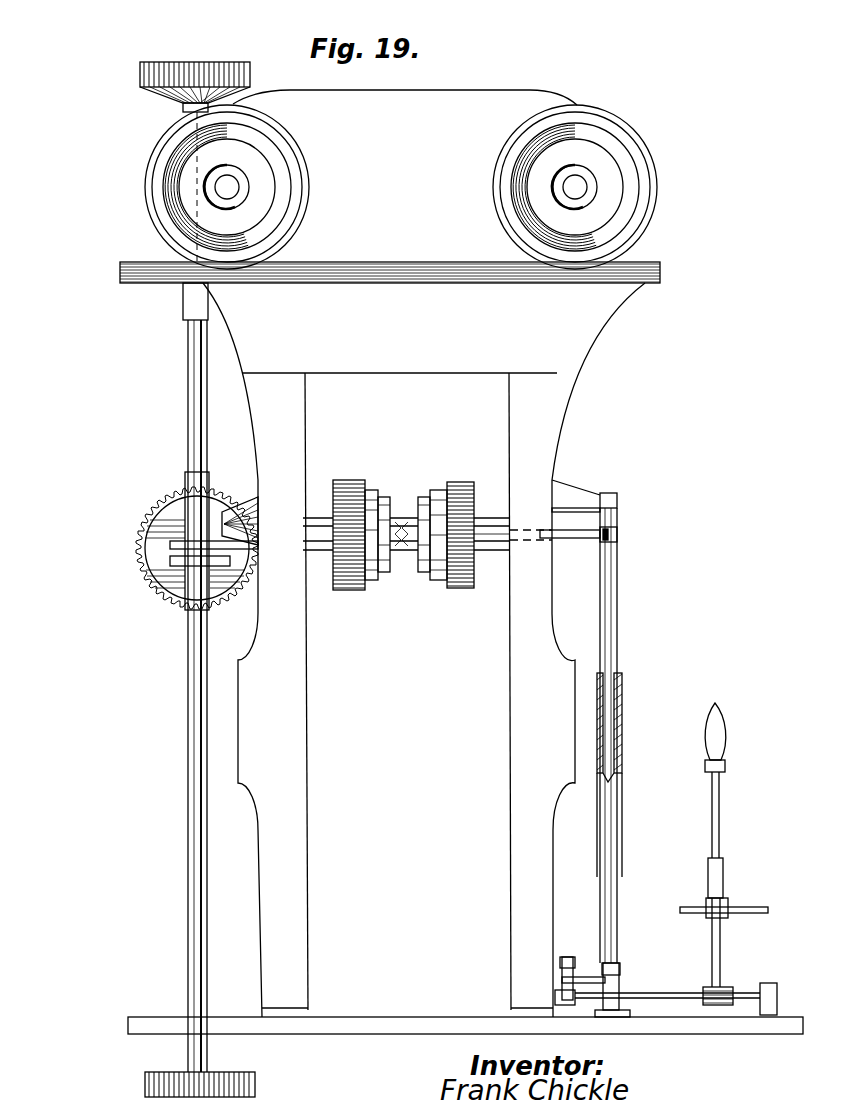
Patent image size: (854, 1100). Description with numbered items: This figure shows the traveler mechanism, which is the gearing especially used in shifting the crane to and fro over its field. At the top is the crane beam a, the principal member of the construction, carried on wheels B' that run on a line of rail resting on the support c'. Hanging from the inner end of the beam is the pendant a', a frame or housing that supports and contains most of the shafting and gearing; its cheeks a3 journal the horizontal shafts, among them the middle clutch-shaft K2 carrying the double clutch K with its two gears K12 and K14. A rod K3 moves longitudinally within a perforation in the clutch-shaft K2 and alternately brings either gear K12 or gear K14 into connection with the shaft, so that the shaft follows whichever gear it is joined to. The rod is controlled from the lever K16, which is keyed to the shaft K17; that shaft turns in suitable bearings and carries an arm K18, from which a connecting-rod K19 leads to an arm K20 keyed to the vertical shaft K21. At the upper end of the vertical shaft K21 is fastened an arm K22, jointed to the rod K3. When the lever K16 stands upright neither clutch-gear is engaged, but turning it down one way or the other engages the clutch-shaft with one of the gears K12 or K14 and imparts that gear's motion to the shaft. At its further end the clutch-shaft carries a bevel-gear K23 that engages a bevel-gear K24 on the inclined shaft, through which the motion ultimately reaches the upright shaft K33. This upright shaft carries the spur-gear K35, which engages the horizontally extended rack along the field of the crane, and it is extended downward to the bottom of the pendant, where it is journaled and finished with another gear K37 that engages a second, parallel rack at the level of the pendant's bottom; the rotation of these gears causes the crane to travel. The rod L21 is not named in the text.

The wheel B' is at (408, 187).
The beam a is at (405, 123).
The support c' is at (399, 267).
The spur-gear K35 is at (212, 87).
The upright shaft K33 is at (181, 432).
The bevel-gear K24 is at (136, 520).
The bevel-gear K23 is at (234, 510).
The clutch-gear K12 is at (361, 524).
The middle clutch K is at (427, 513).
The clutch-gear K14 is at (449, 522).
The clutch-shaft K2 is at (499, 538).
The rod K3 is at (578, 521).
The arm K22 is at (625, 533).
The pendant a' is at (390, 705).
The cheeks a3 is at (408, 739).
The vertical rod L21 is at (624, 735).
The lever K16 is at (724, 845).
The vertical shaft K21 is at (597, 947).
The arm K20 is at (599, 968).
The connecting-rod K19 is at (561, 977).
The shaft K17 is at (676, 993).
The arm K18 is at (568, 1005).
The gear K37 is at (282, 1074).